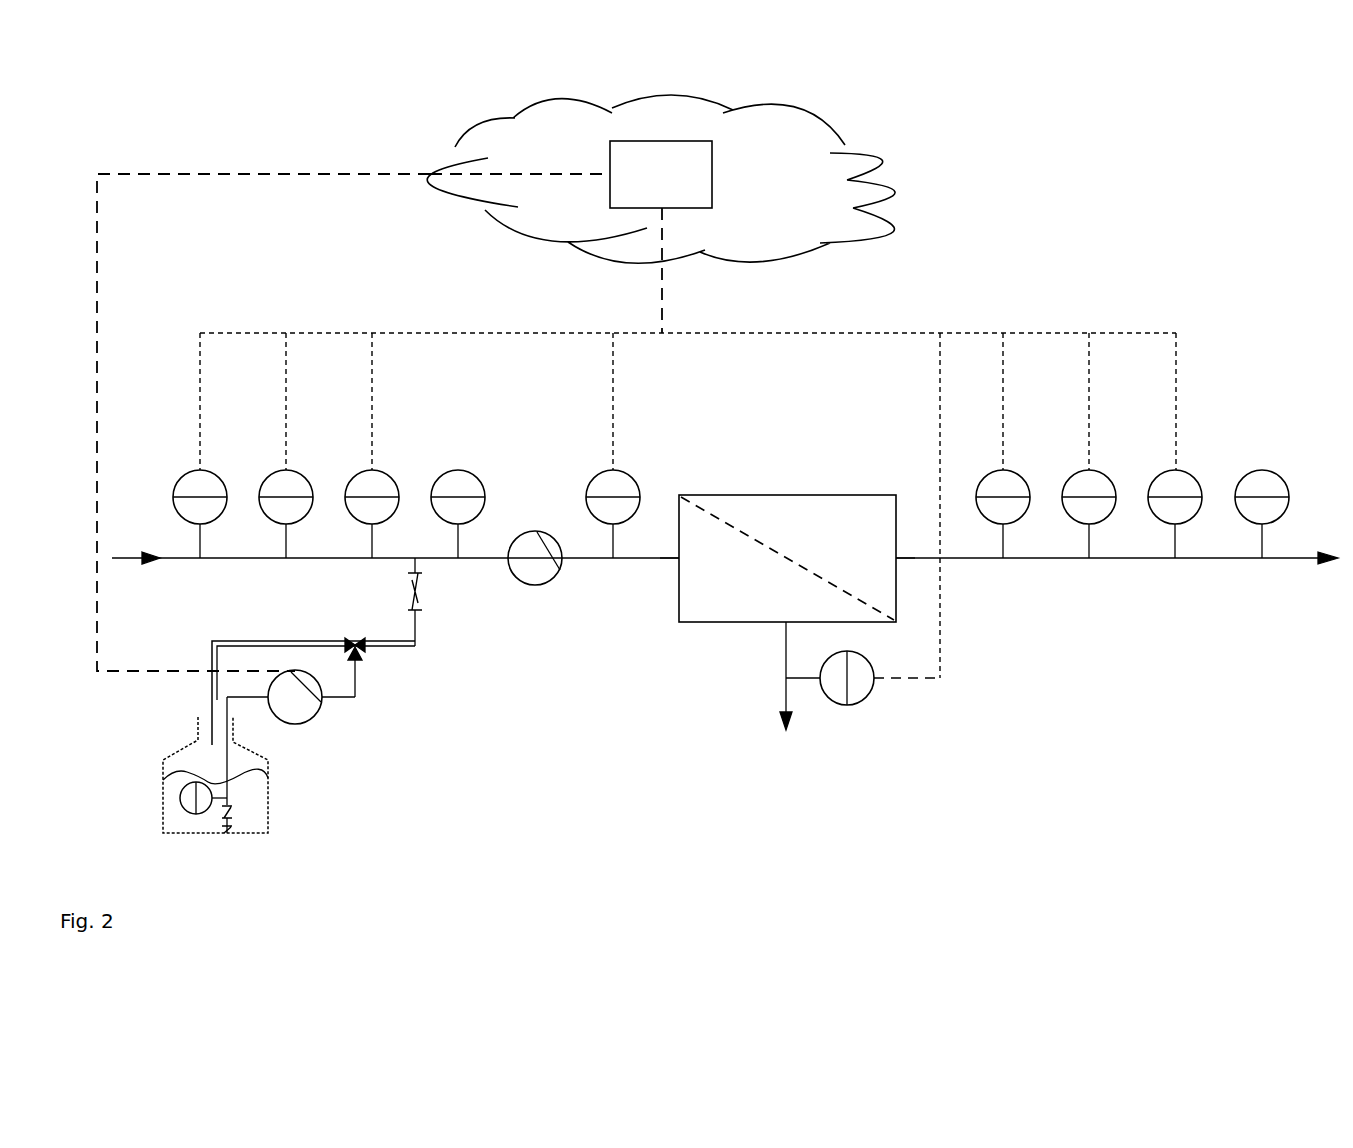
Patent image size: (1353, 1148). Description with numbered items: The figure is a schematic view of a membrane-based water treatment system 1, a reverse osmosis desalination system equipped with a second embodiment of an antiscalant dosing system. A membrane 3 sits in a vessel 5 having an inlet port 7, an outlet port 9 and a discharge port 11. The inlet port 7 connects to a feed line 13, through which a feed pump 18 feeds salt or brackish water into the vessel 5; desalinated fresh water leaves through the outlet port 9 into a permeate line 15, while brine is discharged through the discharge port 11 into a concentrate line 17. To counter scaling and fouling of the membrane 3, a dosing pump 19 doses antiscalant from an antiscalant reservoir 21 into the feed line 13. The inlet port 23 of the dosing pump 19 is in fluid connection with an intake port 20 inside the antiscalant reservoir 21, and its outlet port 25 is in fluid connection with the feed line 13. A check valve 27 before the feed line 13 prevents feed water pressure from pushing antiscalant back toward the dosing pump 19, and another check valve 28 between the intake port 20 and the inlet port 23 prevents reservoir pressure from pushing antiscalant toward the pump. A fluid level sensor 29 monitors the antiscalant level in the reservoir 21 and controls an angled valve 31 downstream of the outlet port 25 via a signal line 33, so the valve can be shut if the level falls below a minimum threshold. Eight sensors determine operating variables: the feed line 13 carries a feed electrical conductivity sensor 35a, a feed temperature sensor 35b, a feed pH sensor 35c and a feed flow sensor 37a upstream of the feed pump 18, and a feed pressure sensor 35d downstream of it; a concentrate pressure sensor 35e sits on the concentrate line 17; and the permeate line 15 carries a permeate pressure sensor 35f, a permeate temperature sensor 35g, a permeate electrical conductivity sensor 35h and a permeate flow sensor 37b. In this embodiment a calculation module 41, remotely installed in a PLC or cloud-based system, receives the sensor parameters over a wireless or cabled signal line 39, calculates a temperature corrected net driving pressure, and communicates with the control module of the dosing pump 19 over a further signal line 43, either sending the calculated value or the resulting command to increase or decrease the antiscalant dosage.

The membrane-based water treatment system 1 is at (224, 106).
The membrane 3 is at (795, 565).
The vessel 5 is at (833, 494).
The inlet port 7 is at (679, 556).
The outlet port 9 is at (896, 557).
The discharge port 11 is at (785, 628).
The feed line 13 is at (472, 558).
The permeate line 15 is at (1030, 558).
The concentrate line 17 is at (785, 657).
The feed pump 18 is at (552, 578).
The dosing pump 19 is at (307, 718).
The intake port 20 is at (226, 828).
The antiscalant reservoir 21 is at (252, 800).
The inlet port 23 is at (263, 698).
The outlet port 25 is at (320, 700).
The check valve 27 is at (420, 586).
The check valve 28 is at (231, 813).
The fluid level sensor 29 is at (181, 812).
The angled valve 31 is at (357, 646).
The signal line 33 is at (279, 644).
The feed electrical conductivity sensor 35a is at (209, 473).
The feed temperature sensor 35b is at (295, 473).
The feed pH sensor 35c is at (381, 473).
The feed pressure sensor 35d is at (604, 473).
The concentrate pressure sensor 35e is at (853, 654).
The permeate pressure sensor 35f is at (1012, 473).
The permeate temperature sensor 35g is at (1099, 475).
The permeate electrical conductivity sensor 35h is at (1184, 473).
The feed flow sensor 37a is at (476, 478).
The permeate flow sensor 37b is at (1280, 478).
The signal line 39 is at (747, 333).
The calculation module 41 is at (712, 157).
The signal line 43 is at (297, 174).